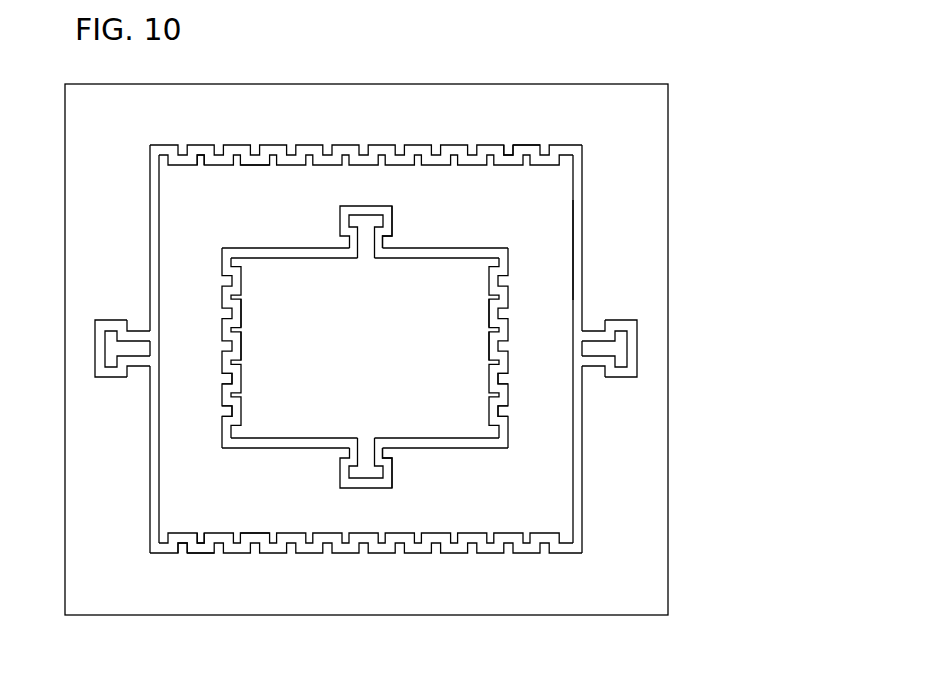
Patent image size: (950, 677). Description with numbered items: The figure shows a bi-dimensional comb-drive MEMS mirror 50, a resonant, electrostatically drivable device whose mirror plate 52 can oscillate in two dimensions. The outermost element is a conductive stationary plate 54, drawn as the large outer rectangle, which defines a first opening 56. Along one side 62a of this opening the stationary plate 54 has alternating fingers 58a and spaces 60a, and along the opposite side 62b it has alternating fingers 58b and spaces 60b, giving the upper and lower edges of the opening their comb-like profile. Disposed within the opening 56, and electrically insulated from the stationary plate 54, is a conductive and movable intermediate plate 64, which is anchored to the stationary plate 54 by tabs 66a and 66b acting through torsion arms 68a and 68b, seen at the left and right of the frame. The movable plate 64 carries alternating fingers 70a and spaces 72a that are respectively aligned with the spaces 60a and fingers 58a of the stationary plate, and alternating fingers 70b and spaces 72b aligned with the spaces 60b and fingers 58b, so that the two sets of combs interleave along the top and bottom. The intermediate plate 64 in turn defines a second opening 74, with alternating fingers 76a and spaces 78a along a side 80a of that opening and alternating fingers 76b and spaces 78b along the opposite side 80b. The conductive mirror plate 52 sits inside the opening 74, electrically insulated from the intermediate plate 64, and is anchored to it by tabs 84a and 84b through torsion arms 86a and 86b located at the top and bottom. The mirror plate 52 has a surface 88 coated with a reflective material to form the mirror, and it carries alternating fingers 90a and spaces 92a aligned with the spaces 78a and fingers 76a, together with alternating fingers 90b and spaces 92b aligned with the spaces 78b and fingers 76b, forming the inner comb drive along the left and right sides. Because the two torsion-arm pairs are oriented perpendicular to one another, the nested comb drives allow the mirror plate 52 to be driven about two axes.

The bi-dimensional comb-drive MEMS mirror 50 is at (548, 70).
The mirror plate 52 is at (368, 344).
The stationary plate 54 is at (650, 494).
The first opening 56 is at (594, 205).
The fingers 58a is at (508, 140).
The fingers 58b is at (195, 556).
The spaces 60a is at (518, 140).
The spaces 60b is at (208, 556).
The side of the opening 62a is at (355, 135).
The opposite side of the opening 62b is at (362, 570).
The intermediate plate 64 is at (512, 211).
The tab 66a is at (110, 347).
The tab 66b is at (625, 347).
The torsion arm 68a is at (123, 372).
The torsion arm 68b is at (607, 372).
The fingers 70a is at (200, 165).
The fingers 70b is at (205, 533).
The spaces 72a is at (255, 163).
The spaces 72b is at (256, 538).
The second opening 74 is at (483, 460).
The fingers 76a is at (228, 406).
The fingers 76b is at (508, 384).
The spaces 78a is at (226, 370).
The spaces 78b is at (505, 432).
The side of the opening 80a is at (212, 294).
The opposite side of the opening 80b is at (518, 294).
The tab 84a is at (373, 212).
The tab 84b is at (372, 484).
The torsion arm 86a is at (388, 236).
The torsion arm 86b is at (386, 466).
The surface 88 is at (342, 244).
The fingers 90a is at (246, 304).
The fingers 90b is at (489, 304).
The spaces 92a is at (250, 352).
The spaces 92b is at (484, 352).